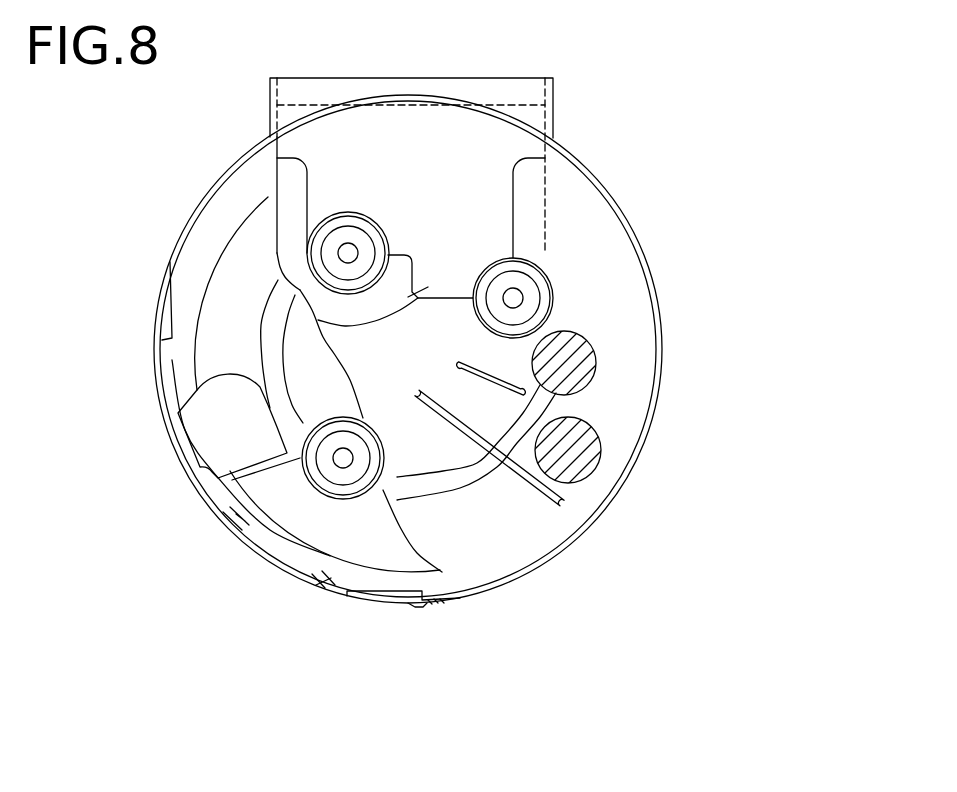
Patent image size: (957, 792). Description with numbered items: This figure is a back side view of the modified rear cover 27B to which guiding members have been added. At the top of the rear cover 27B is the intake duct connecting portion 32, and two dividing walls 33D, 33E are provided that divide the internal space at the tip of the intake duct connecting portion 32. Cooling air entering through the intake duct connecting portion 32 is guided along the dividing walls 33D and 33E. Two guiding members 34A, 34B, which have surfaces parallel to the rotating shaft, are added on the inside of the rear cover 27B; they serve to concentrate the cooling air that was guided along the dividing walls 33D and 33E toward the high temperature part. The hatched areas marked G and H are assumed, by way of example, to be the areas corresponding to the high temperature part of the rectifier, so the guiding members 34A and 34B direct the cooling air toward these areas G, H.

The rear cover 27B is at (610, 166).
The intake duct connecting portion 32 is at (553, 107).
The dividing wall 33D is at (350, 325).
The dividing wall 33E is at (342, 353).
The area corresponding to high temperature part G is at (587, 342).
The area corresponding to high temperature part H is at (592, 437).
The guiding member 34A is at (500, 337).
The guiding member 34B is at (525, 466).